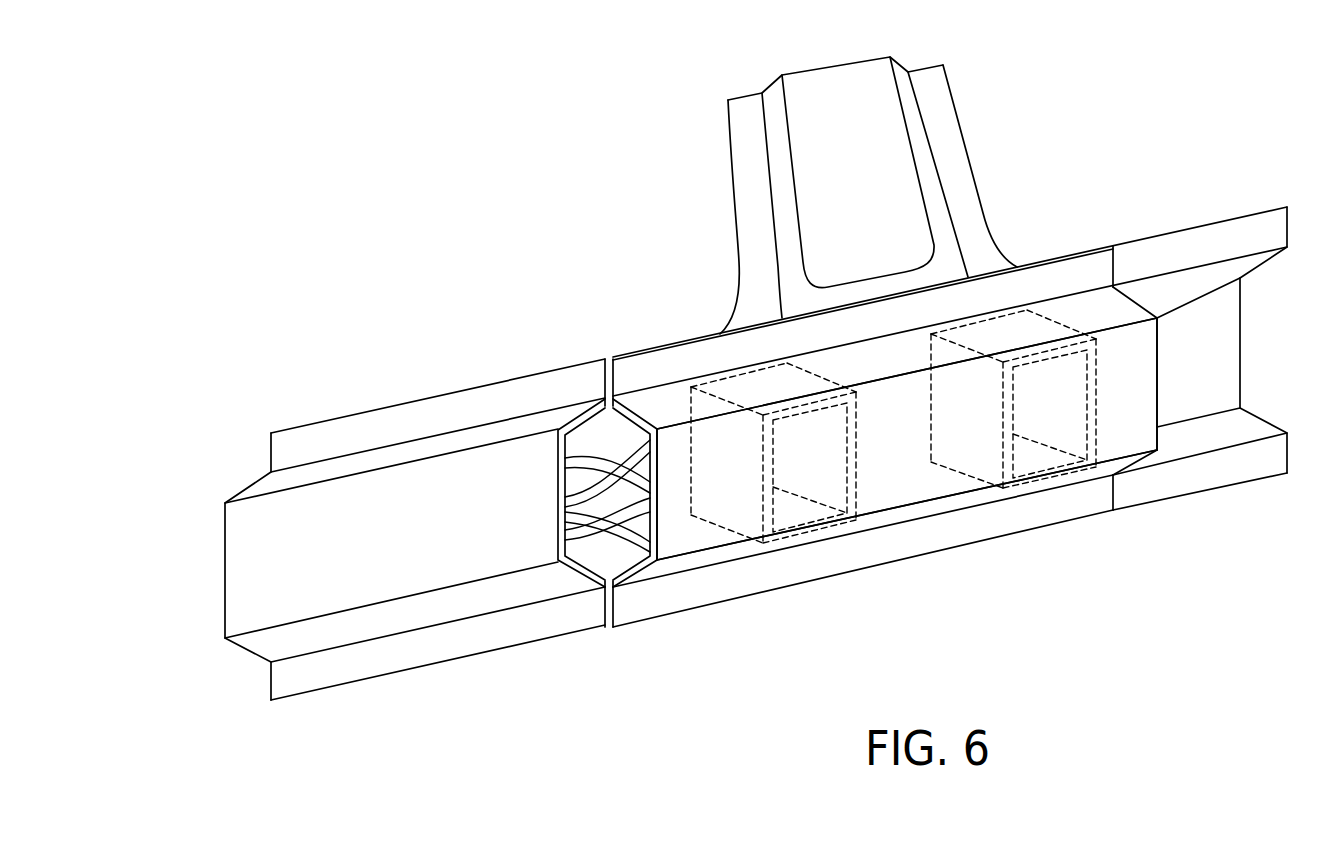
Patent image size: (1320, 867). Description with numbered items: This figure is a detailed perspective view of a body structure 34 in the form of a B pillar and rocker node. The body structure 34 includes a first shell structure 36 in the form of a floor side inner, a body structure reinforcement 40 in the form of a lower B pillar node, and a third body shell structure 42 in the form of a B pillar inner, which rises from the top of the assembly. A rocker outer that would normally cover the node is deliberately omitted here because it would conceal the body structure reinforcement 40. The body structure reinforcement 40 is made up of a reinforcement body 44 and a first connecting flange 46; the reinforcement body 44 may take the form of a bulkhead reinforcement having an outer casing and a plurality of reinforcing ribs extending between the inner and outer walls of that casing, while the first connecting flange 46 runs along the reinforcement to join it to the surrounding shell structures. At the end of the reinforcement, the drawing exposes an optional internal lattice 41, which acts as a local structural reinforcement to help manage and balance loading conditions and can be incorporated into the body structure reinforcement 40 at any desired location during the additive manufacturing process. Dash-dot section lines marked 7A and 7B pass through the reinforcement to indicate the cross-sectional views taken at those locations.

The body structure 34 is at (490, 221).
The first shell structure 36 is at (243, 555).
The body structure reinforcement 40 is at (530, 683).
The internal lattice 41 is at (633, 455).
The third body shell structure 42 is at (938, 183).
The reinforcement body 44 is at (1127, 433).
The first connecting flange 46 is at (687, 355).
The section line 7A is at (612, 300).
The section line 7B is at (691, 248).